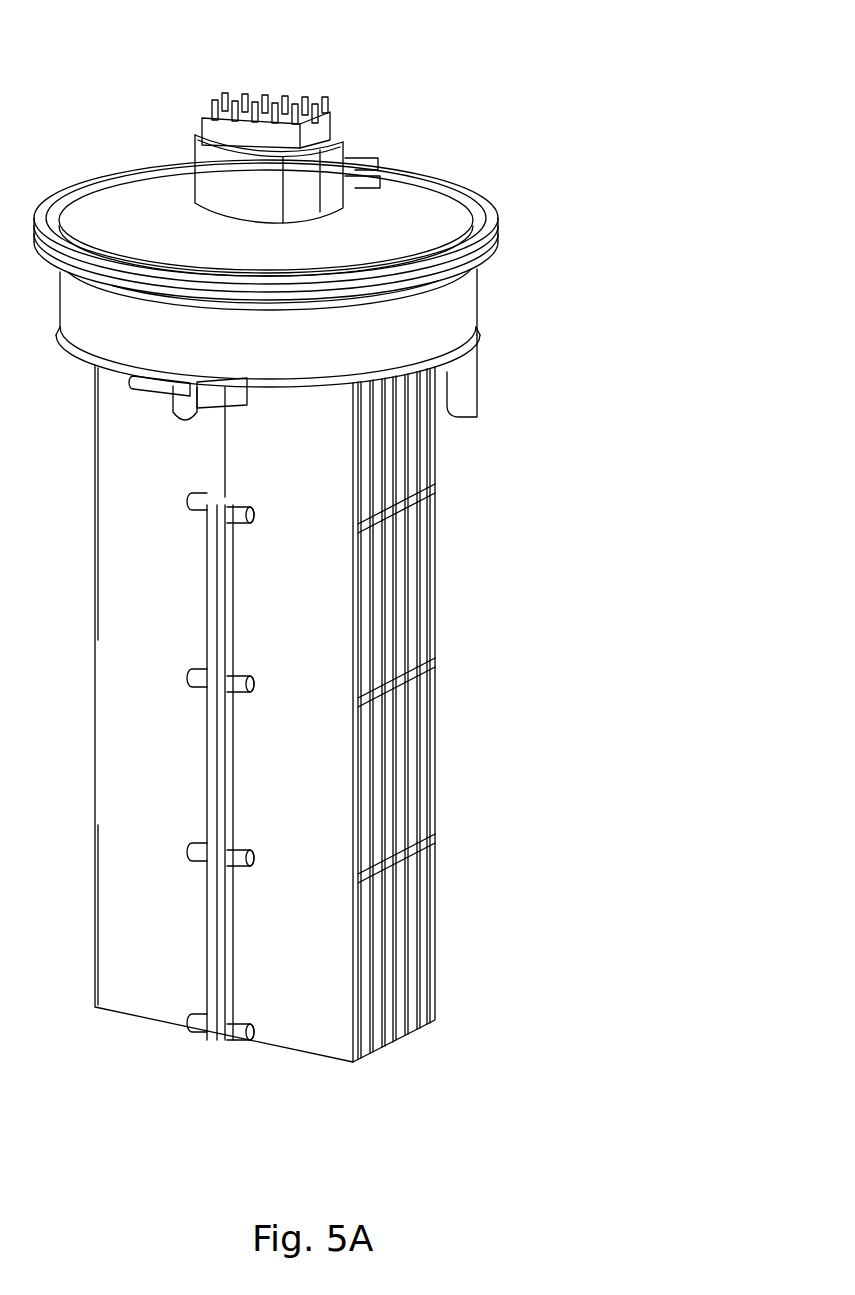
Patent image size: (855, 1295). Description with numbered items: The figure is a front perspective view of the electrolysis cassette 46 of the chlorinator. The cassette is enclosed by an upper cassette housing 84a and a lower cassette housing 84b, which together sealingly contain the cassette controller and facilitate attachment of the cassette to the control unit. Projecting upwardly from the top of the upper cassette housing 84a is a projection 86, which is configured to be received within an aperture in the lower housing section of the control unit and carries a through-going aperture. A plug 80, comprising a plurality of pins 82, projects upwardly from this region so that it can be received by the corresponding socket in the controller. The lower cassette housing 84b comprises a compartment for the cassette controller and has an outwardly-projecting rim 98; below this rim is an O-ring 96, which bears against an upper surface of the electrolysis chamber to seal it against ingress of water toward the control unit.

The electrolysis cassette 46 is at (572, 298).
The plug 80 is at (321, 111).
The pins 82 is at (297, 110).
The projection 86 is at (327, 188).
The upper cassette housing 84a is at (428, 208).
The lower cassette housing 84b is at (460, 302).
The outwardly-projecting rim 98 is at (498, 248).
The O-ring 96 is at (408, 300).